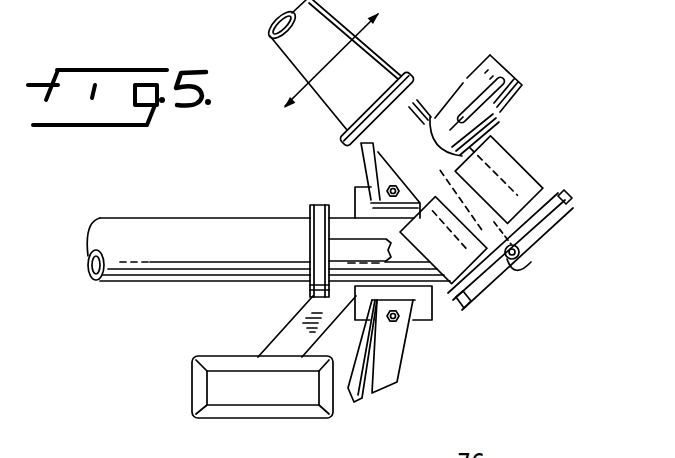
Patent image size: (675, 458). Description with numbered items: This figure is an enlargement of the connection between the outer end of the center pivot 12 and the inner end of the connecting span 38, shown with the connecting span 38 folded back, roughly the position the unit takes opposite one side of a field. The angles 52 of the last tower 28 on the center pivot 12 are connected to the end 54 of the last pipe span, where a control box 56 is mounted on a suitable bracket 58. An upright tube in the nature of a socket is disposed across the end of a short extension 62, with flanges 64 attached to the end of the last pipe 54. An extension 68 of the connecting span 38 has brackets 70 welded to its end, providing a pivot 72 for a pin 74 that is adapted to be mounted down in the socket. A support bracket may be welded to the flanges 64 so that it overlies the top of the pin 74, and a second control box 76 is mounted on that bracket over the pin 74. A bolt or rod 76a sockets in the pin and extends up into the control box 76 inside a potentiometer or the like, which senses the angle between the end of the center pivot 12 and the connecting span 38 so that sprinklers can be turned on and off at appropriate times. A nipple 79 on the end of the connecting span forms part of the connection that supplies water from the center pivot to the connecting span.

The center pivot 12 is at (145, 213).
The last tower 28 is at (406, 375).
The connecting span 38 is at (268, 34).
The angles 52 is at (362, 156).
The end of the last pipe span 54 is at (143, 274).
The control box 56 is at (219, 416).
The bracket 58 is at (280, 341).
The short extension 62 is at (437, 287).
The flanges 64 is at (324, 206).
The extension 68 is at (418, 112).
The brackets 70 is at (452, 190).
The pivot 72 is at (567, 216).
The pin 74 is at (505, 277).
The control box 76 is at (343, 249).
The bolt or rod 76a is at (532, 258).
The nipple 79 is at (508, 73).